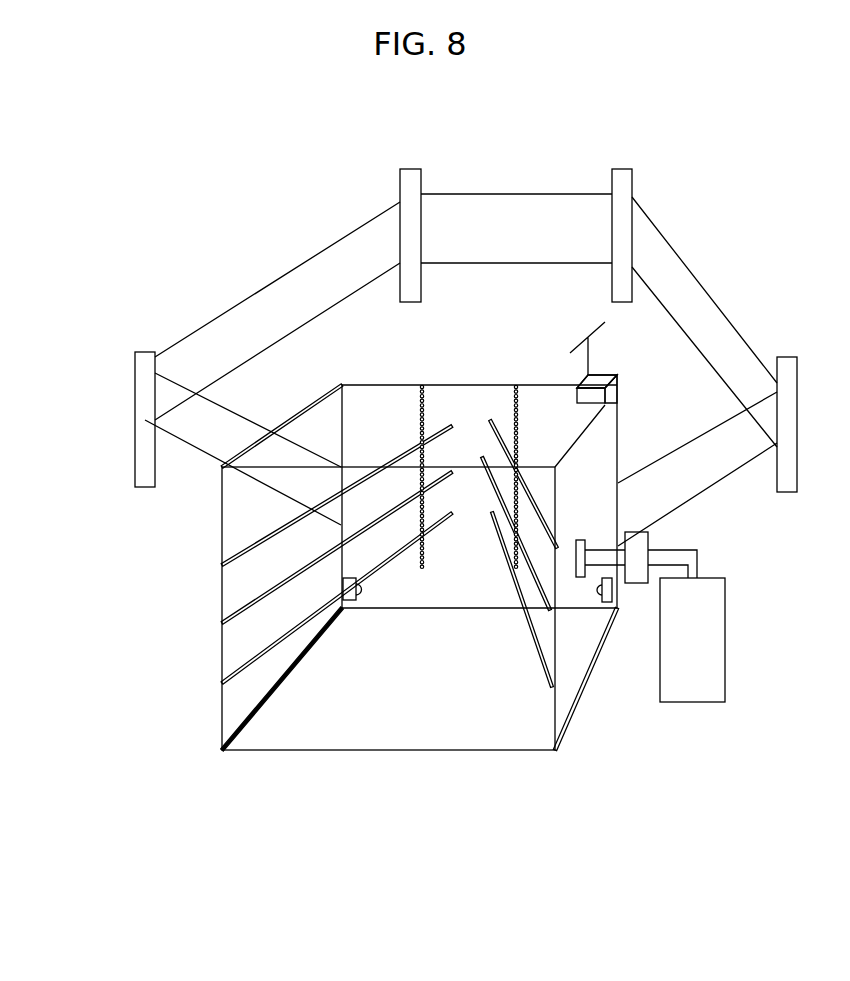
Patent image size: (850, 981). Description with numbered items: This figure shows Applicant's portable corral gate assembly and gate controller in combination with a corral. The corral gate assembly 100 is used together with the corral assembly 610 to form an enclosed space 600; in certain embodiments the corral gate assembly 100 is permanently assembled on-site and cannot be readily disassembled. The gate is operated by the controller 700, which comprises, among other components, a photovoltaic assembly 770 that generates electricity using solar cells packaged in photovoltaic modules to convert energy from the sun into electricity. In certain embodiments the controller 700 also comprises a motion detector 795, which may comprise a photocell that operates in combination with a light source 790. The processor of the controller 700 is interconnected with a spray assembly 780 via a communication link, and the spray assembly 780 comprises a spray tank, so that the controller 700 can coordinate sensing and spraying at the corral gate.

The corral assembly 610 is at (89, 165).
The corral gate assembly 100 is at (205, 701).
The enclosed space 600 is at (412, 792).
The photovoltaic assembly 770 is at (590, 337).
The controller 700 is at (608, 367).
The light source 790 is at (343, 588).
The spray assembly 780 is at (637, 660).
The motion detector 795 is at (602, 603).